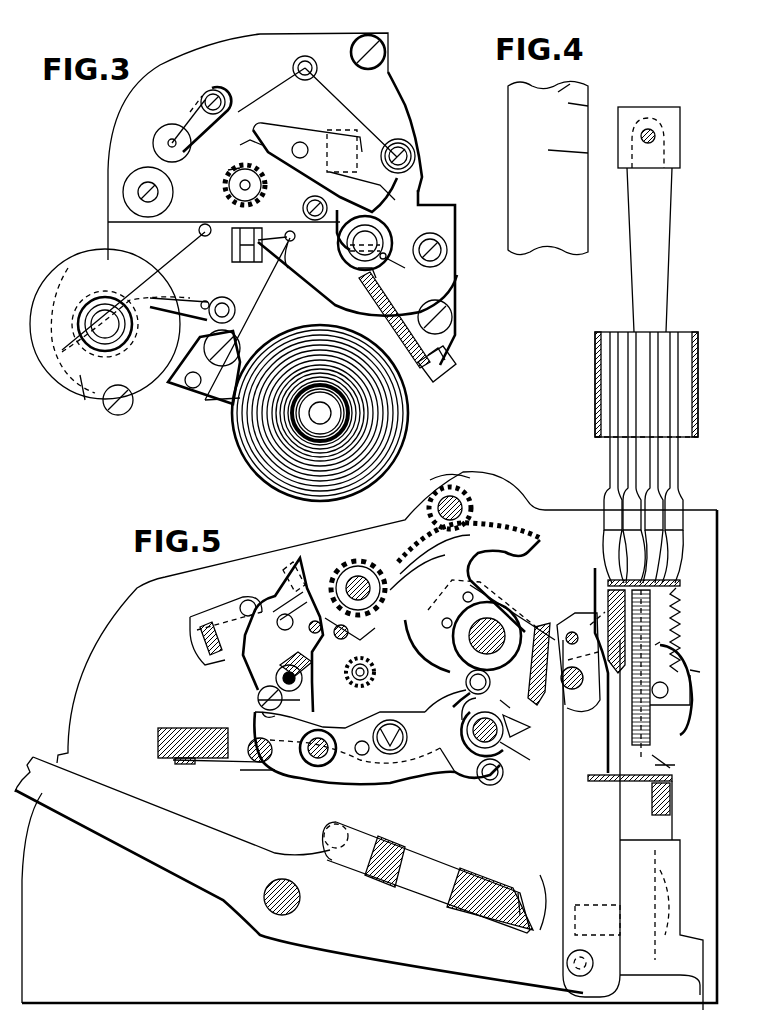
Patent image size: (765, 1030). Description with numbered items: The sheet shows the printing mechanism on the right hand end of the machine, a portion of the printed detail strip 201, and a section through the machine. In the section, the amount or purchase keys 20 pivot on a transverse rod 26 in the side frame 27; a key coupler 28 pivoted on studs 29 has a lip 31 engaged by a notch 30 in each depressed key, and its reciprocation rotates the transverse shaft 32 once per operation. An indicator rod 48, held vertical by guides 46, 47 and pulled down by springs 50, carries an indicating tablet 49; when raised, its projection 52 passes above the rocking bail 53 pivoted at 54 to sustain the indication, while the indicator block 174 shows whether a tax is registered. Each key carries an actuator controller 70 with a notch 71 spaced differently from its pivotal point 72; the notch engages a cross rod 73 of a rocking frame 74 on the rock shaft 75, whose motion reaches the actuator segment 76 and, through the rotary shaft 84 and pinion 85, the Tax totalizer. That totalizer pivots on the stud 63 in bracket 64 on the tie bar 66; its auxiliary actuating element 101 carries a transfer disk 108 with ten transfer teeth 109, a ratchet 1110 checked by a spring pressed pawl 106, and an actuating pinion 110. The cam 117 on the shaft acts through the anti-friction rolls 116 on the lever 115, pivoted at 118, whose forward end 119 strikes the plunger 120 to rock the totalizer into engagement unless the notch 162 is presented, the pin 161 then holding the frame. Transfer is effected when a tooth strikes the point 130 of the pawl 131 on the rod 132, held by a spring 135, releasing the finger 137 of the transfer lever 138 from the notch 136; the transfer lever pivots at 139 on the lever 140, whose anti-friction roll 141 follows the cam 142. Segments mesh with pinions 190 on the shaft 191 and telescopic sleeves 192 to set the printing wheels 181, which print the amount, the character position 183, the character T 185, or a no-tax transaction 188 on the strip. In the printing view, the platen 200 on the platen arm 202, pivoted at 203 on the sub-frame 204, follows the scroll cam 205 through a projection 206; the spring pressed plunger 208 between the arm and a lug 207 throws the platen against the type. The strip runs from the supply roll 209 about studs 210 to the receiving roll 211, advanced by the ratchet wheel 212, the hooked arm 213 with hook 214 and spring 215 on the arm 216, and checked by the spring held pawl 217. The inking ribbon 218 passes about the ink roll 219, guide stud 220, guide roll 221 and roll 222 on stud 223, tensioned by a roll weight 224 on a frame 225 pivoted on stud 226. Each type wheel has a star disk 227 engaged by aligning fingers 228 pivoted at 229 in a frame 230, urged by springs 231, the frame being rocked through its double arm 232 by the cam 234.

In FIG. 5, the amount or purchase keys 20 is at (82, 825).
In FIG. 5, the transverse rod 26 is at (275, 915).
In FIG. 5, the side frame 27 is at (135, 600).
In FIG. 5, the key coupler 28 is at (445, 860).
In FIG. 3, the studs 29 is at (222, 304).
In FIG. 5, the studs 29 is at (324, 836).
In FIG. 5, the notch 30 is at (545, 880).
In FIG. 5, the lip 31 is at (520, 890).
In FIG. 3, the transverse shaft 32 is at (388, 257).
In FIG. 5, the transverse shaft 32 is at (519, 754).
In FIG. 5, the guide 46 is at (680, 583).
In FIG. 5, the guide 47 is at (676, 782).
In FIG. 5, the indicator rod 48 is at (665, 822).
In FIG. 4, the indicating tablets 49 is at (672, 336).
In FIG. 5, the springs 50 is at (655, 618).
In FIG. 5, the projection 52 is at (668, 762).
In FIG. 5, the rocking bail 53 is at (695, 705).
In FIG. 5, the pivot 54 is at (670, 695).
In FIG. 5, the stud 63 is at (313, 768).
In FIG. 5, the bracket 64 is at (262, 768).
In FIG. 5, the tie bar 66 is at (157, 745).
In FIG. 5, the actuator controller 70 is at (565, 812).
In FIG. 5, the notch 71 is at (610, 682).
In FIG. 5, the pivotal points 72 is at (580, 978).
In FIG. 5, the cross rod 73 is at (566, 705).
In FIG. 5, the rocking frame 74 is at (545, 624).
In FIG. 5, the rock shaft 75 is at (470, 655).
In FIG. 5, the actuator segment 76 is at (535, 550).
In FIG. 5, the rotary shaft 84 is at (466, 508).
In FIG. 5, the pinion 85 is at (465, 490).
In FIG. 5, the auxiliary actuating element 101 is at (415, 565).
In FIG. 5, the spring pressed pawl 106 is at (350, 632).
In FIG. 5, the transfer disk 108 is at (380, 568).
In FIG. 5, the transfer teeth 109 is at (350, 568).
In FIG. 5, the actuating pinion 110 is at (398, 578).
In FIG. 5, the ratchet 1110 is at (340, 560).
In FIG. 5, the lever 115 is at (402, 780).
In FIG. 5, the anti-friction rolls 116 is at (490, 786).
In FIG. 5, the cam 117 is at (458, 714).
In FIG. 5, the pivot 118 is at (362, 756).
In FIG. 5, the forward end 119 is at (300, 698).
In FIG. 5, the plunger 120 is at (258, 697).
In FIG. 5, the point 130 is at (322, 578).
In FIG. 5, the pawl 131 is at (278, 628).
In FIG. 5, the rod 132 is at (300, 640).
In FIG. 5, the spring 135 is at (300, 652).
In FIG. 5, the notch 136 is at (282, 595).
In FIG. 5, the finger or projection 137 is at (298, 571).
In FIG. 5, the transfer lever 138 is at (220, 610).
In FIG. 5, the pivot 139 is at (246, 598).
In FIG. 5, the lever 140 is at (232, 672).
In FIG. 5, the anti-friction roll 141 is at (452, 777).
In FIG. 5, the cam 142 is at (530, 728).
In FIG. 5, the pin 161 is at (302, 679).
In FIG. 5, the notch 162 is at (262, 710).
In FIG. 4, the indicator block 174 is at (680, 133).
In FIG. 3, the printing wheels 181 is at (222, 176).
In FIG. 4, the character position 183 is at (578, 79).
In FIG. 4, the character T 185 is at (594, 105).
In FIG. 4, the no-tax transaction 188 is at (584, 152).
In FIG. 5, the pinion 190 is at (366, 684).
In FIG. 3, the shaft 191 is at (240, 186).
In FIG. 5, the shaft 191 is at (372, 678).
In FIG. 5, the telescopic sleeves 192 is at (372, 664).
In FIG. 3, the platen 200 is at (243, 264).
In FIG. 3, the detail strip 201 is at (198, 230).
In FIG. 4, the detail strip 201 is at (520, 88).
In FIG. 3, the platen arm 202 is at (306, 285).
In FIG. 3, the pivot 203 is at (450, 252).
In FIG. 3, the sub-frame 204 is at (240, 50).
In FIG. 3, the scroll cam 205 is at (368, 222).
In FIG. 3, the projection 206 is at (360, 282).
In FIG. 3, the lug 207 is at (440, 372).
In FIG. 3, the spring pressed plunger 208 is at (436, 352).
In FIG. 3, the supply roll 209 is at (408, 418).
In FIG. 3, the studs 210 is at (200, 235).
In FIG. 3, the receiving roll 211 is at (68, 262).
In FIG. 3, the ratchet wheel 212 is at (130, 328).
In FIG. 3, the hooked arm 213 is at (85, 395).
In FIG. 3, the hook 214 is at (70, 352).
In FIG. 3, the spring 215 is at (208, 392).
In FIG. 3, the arm 216 is at (240, 398).
In FIG. 3, the spring held pawl 217 is at (196, 300).
In FIG. 3, the inking ribbon 218 is at (360, 118).
In FIG. 3, the ink roll 219 is at (123, 185).
In FIG. 3, the guide stud 220 is at (292, 238).
In FIG. 3, the guide roll 221 is at (307, 55).
In FIG. 3, the roll 222 is at (408, 140).
In FIG. 3, the stud 223 is at (413, 158).
In FIG. 3, the roll weight 224 is at (162, 132).
In FIG. 3, the frame 225 is at (206, 96).
In FIG. 3, the stud 226 is at (228, 106).
In FIG. 3, the star disk 227 is at (238, 152).
In FIG. 3, the aligning fingers 228 is at (262, 125).
In FIG. 3, the pivot 229 is at (300, 142).
In FIG. 3, the frame 230 is at (345, 136).
In FIG. 3, the springs 231 is at (390, 150).
In FIG. 3, the double arm 232 is at (438, 190).
In FIG. 3, the cam 234 is at (433, 233).